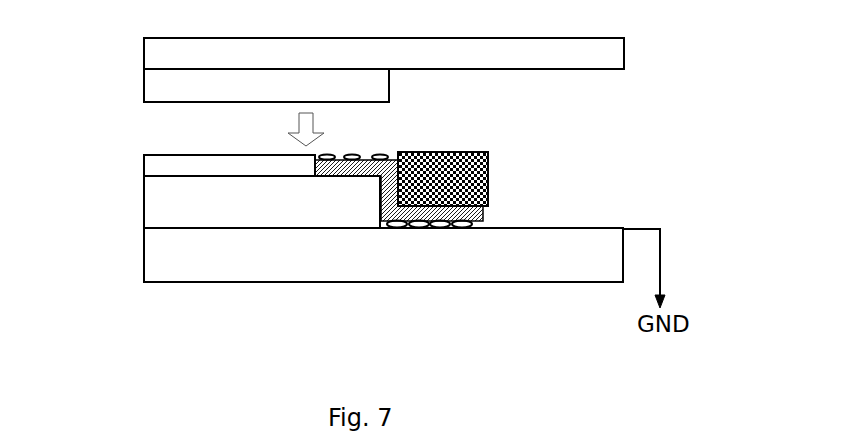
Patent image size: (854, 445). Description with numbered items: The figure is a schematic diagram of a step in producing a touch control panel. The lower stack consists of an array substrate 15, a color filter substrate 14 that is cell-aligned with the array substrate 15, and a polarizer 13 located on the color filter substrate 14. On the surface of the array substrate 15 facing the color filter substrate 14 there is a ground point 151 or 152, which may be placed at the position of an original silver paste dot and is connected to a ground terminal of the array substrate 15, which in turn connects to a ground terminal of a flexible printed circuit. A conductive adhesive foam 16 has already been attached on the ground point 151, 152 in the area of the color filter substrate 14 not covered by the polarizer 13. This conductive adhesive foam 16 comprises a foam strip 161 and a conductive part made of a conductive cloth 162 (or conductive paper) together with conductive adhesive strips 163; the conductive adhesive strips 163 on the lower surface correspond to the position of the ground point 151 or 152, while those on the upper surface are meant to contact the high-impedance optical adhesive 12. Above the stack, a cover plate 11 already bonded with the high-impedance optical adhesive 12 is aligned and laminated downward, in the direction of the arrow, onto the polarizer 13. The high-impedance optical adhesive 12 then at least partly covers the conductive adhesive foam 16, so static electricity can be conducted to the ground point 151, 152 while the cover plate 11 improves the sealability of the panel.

The cover plate 11 is at (592, 60).
The high-impedance optical adhesive 12 is at (155, 83).
The polarizer 13 is at (157, 165).
The color filter substrate 14 is at (155, 202).
The array substrate 15 is at (155, 257).
The conductive adhesive foam 16 is at (469, 188).
The foam strip 161 is at (486, 190).
The conductive cloth 162 is at (486, 212).
The conductive adhesive strip 163 is at (480, 224).
The ground point 151 is at (488, 267).
The ground point 152 is at (428, 227).